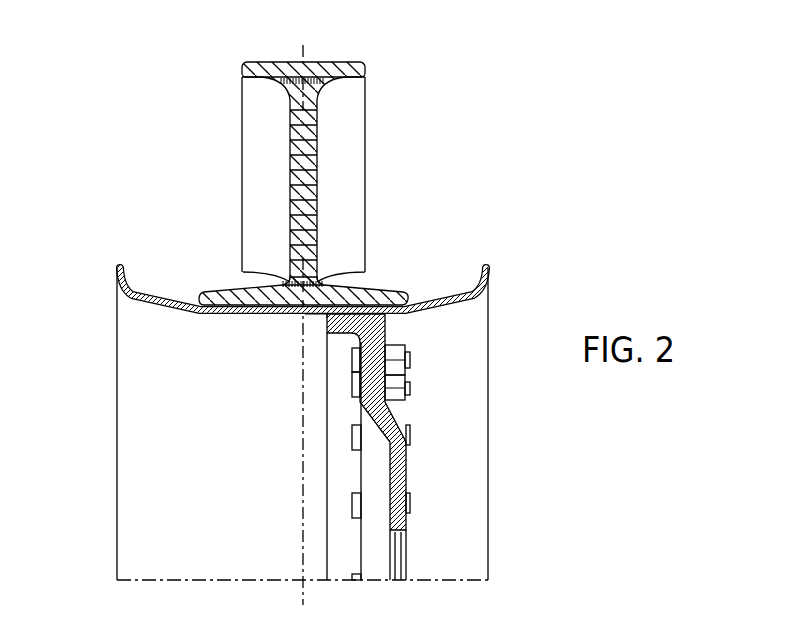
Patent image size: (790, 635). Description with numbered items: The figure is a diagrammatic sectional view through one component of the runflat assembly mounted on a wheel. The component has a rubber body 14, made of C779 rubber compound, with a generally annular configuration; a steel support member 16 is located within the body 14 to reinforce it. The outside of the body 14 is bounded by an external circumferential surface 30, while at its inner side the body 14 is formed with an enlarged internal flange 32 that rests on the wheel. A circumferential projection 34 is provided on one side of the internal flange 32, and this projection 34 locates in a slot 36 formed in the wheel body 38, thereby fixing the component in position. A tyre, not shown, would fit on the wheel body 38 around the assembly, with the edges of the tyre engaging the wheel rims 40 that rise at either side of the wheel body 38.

The rubber body 14 is at (310, 147).
The steel support member 16 is at (312, 76).
The external circumferential surface 30 is at (262, 63).
The internal flange 32 is at (370, 296).
The circumferential projection 34 is at (326, 320).
The slot 36 is at (343, 300).
The wheel body 38 is at (432, 308).
The wheel rims 40 is at (121, 268).